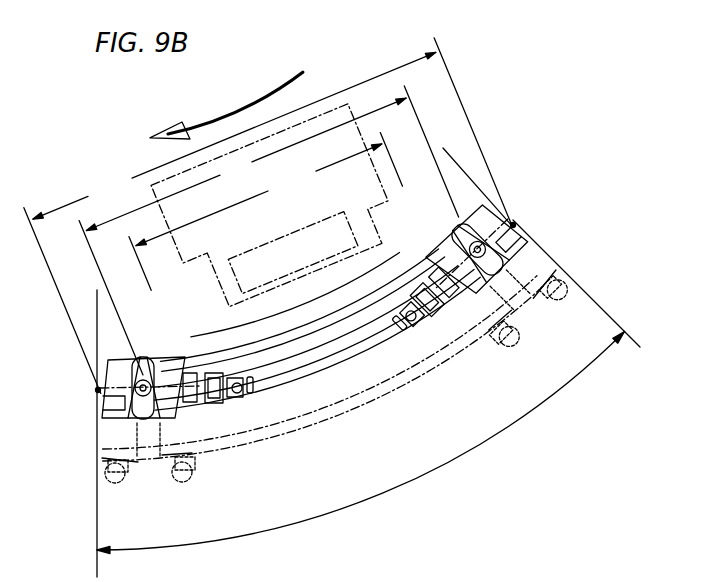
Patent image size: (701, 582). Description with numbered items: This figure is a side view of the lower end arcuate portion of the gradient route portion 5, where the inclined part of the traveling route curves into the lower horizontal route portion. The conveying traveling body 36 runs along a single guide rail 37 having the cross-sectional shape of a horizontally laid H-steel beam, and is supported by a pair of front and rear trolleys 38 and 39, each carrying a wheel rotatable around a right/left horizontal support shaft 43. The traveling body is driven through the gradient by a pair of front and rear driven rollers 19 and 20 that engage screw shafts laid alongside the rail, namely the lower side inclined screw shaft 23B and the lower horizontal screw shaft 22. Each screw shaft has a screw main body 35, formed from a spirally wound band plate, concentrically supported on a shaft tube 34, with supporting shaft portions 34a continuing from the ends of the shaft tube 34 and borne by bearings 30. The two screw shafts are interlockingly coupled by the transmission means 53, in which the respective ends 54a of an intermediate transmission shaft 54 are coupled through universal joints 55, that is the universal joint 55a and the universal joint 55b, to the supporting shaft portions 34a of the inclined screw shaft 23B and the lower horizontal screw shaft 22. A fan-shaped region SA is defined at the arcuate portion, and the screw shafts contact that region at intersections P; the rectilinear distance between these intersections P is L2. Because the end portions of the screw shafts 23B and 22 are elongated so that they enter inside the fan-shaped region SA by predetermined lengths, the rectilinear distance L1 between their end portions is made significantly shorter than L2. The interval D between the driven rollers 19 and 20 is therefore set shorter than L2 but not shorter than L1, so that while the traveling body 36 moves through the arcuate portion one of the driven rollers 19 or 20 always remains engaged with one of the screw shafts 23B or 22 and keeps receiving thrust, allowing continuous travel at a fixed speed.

The gradient route portion 5 is at (392, 398).
The driven roller 19 is at (143, 360).
The driven roller 20 is at (462, 227).
The lower horizontal screw shaft 22 is at (107, 350).
The inclined screw shaft 23B is at (475, 203).
The bearing 30 is at (217, 367).
The shaft tube 34 is at (517, 243).
The supporting shaft portion 34a is at (447, 282).
The screw main body 35 is at (433, 240).
The conveying traveling body 36 is at (316, 114).
The guide rail 37 is at (292, 410).
The trolley 38 is at (110, 447).
The trolley 39 is at (535, 268).
The right/left horizontal support shaft 43 is at (135, 420).
The transmission means 53 is at (315, 363).
The intermediate transmission shaft 54 is at (103, 367).
The rail block 54a is at (197, 402).
The slider 55 is at (153, 417).
The universal joint 55a is at (413, 327).
The universal joint 55b is at (238, 392).
The intersection P is at (304, 303).
The fan-shaped region SA is at (432, 473).
The rectilinear distance L1 is at (266, 212).
The rectilinear distance L2 is at (267, 216).
The interval D is at (269, 230).